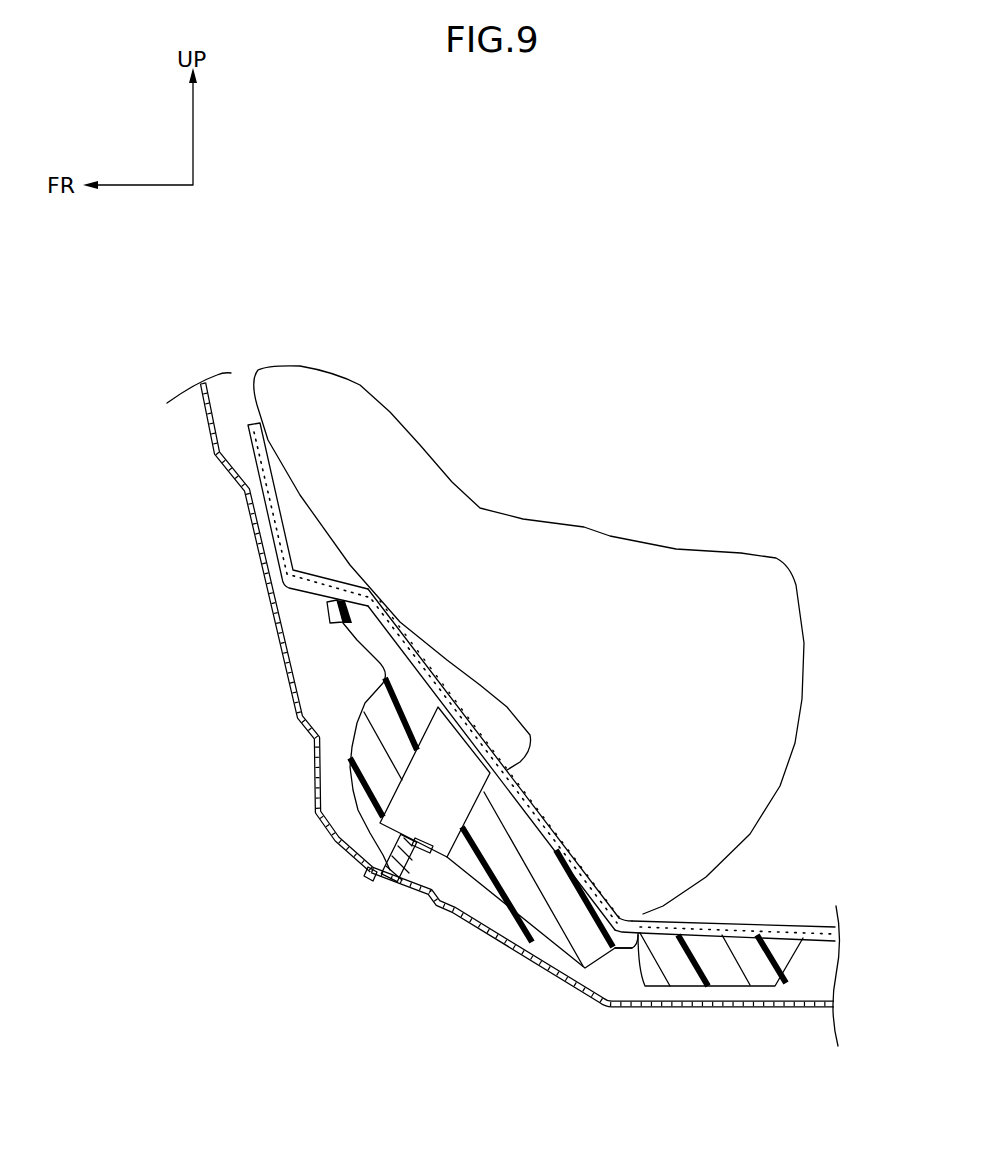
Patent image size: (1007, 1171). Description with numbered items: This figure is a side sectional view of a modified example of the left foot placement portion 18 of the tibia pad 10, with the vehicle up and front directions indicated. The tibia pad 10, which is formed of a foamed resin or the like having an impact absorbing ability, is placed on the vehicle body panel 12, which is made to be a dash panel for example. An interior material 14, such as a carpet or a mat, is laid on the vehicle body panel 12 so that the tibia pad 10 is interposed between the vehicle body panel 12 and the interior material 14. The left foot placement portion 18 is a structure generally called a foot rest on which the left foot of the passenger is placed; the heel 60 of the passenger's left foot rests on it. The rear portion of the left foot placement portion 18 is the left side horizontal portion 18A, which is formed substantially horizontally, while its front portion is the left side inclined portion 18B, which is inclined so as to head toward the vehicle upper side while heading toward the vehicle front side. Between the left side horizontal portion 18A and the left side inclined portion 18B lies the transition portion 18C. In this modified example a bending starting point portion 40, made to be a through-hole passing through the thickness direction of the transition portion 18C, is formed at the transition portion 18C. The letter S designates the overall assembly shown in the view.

The seat back S is at (519, 310).
The tibia pad 10 is at (358, 702).
The vehicle body panel 12 is at (277, 627).
The interior material 14 is at (283, 517).
The left foot placement portion 18 is at (495, 934).
The left side horizontal portion 18A is at (753, 926).
The left side inclined portion 18B is at (544, 812).
The transition portion 18C is at (640, 918).
The bending starting point portion 40 is at (630, 925).
The heel 60 is at (672, 908).